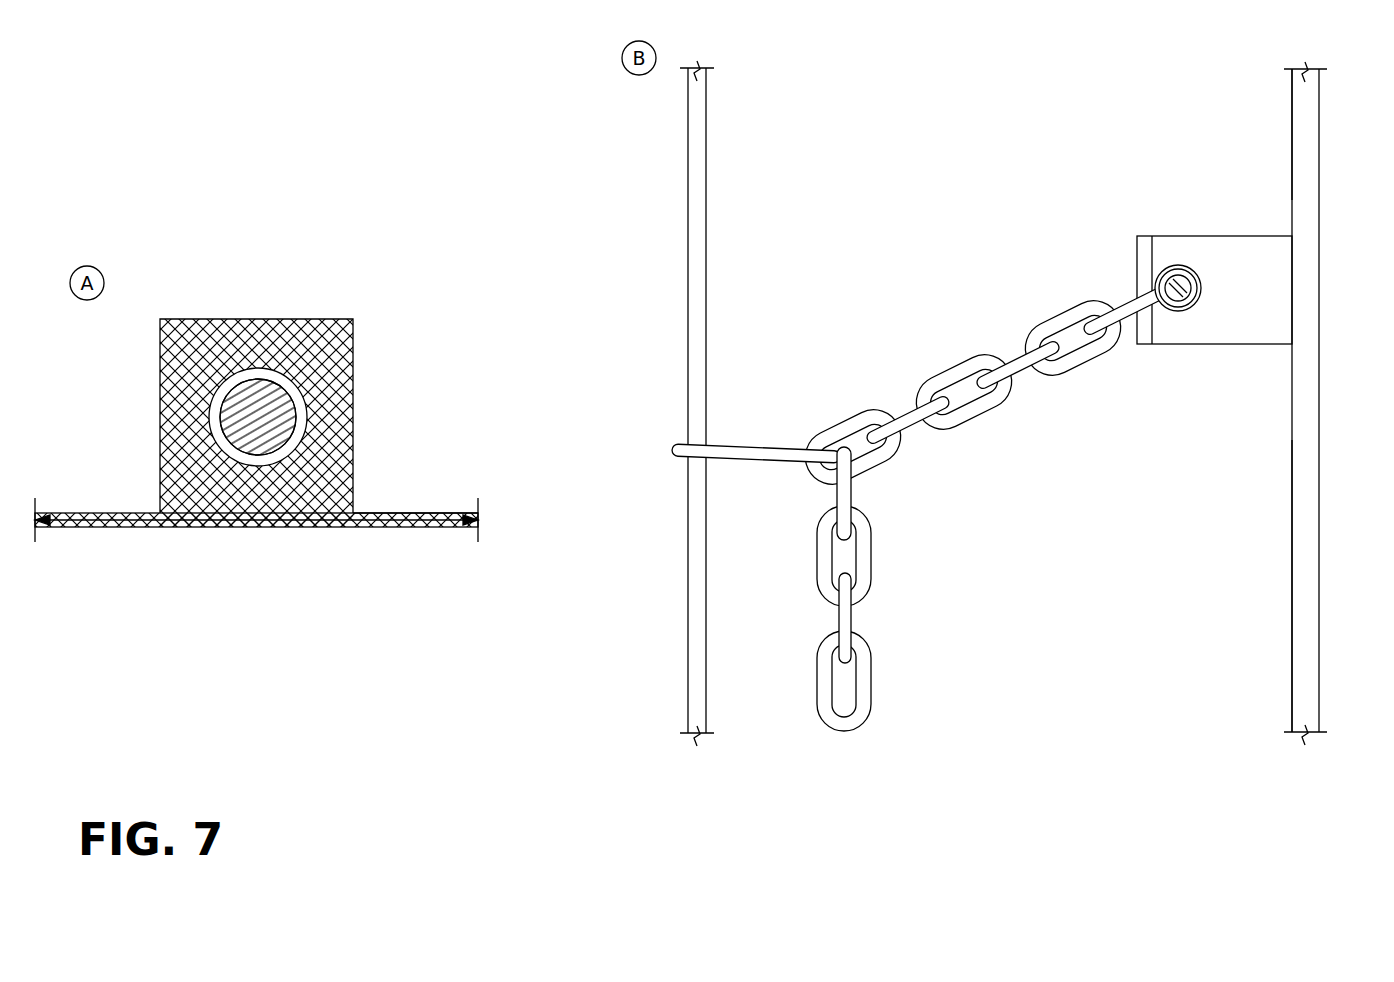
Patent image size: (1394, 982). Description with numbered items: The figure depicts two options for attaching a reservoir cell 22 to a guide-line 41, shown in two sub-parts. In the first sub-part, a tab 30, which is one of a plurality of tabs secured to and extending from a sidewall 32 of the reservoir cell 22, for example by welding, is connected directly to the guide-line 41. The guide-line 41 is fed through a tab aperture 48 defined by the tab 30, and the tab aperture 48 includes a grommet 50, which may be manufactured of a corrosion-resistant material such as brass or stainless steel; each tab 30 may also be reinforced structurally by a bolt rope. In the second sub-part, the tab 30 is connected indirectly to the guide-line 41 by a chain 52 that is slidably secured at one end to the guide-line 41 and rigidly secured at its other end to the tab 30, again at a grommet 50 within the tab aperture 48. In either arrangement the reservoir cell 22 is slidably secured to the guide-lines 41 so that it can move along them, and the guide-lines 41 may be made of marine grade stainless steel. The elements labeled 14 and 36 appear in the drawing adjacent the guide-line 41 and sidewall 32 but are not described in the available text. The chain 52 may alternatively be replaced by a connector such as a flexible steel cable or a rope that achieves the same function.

The post 14 is at (90, 530).
The reservoir cell 22 is at (415, 528).
The tab 30 is at (240, 400).
The sidewall 32 is at (1292, 118).
The lower post portion 36 is at (1292, 523).
The guide-line 41 is at (238, 384).
The tab aperture 48 is at (293, 442).
The grommet 50 is at (302, 412).
The chain 52 is at (998, 392).